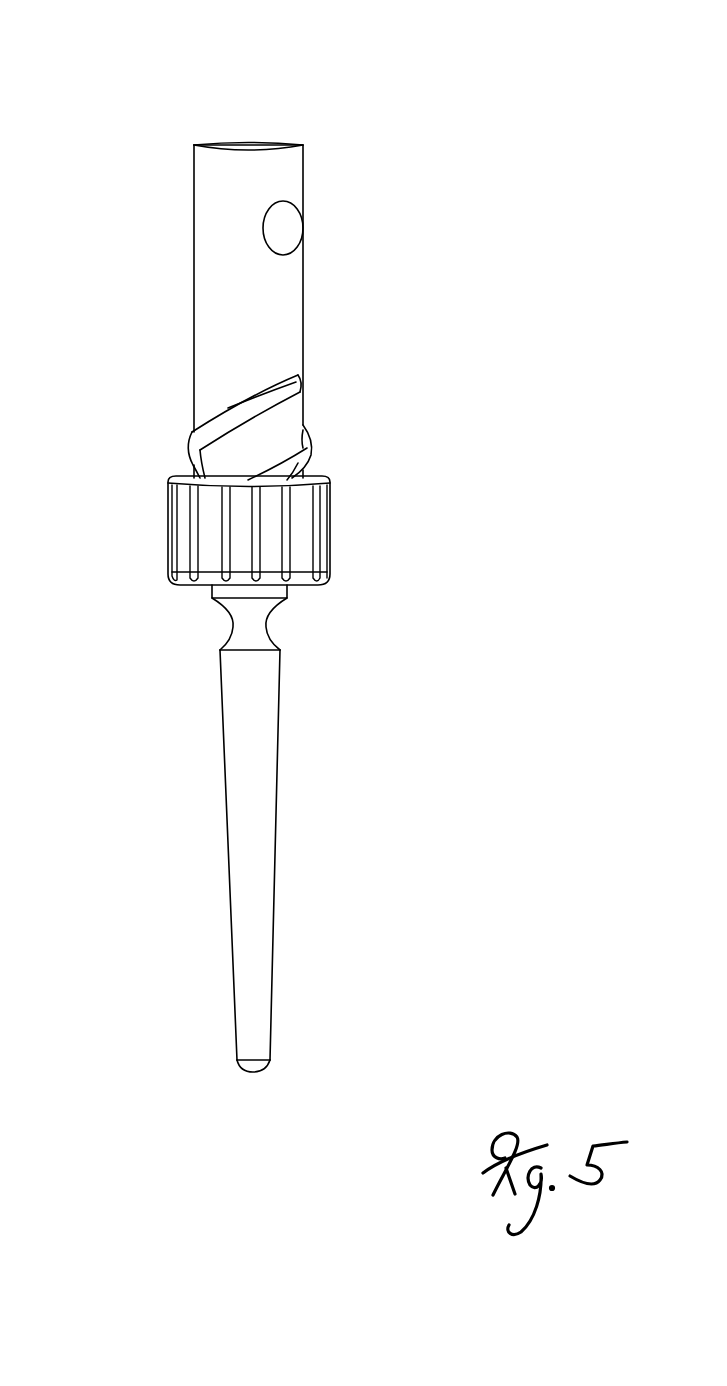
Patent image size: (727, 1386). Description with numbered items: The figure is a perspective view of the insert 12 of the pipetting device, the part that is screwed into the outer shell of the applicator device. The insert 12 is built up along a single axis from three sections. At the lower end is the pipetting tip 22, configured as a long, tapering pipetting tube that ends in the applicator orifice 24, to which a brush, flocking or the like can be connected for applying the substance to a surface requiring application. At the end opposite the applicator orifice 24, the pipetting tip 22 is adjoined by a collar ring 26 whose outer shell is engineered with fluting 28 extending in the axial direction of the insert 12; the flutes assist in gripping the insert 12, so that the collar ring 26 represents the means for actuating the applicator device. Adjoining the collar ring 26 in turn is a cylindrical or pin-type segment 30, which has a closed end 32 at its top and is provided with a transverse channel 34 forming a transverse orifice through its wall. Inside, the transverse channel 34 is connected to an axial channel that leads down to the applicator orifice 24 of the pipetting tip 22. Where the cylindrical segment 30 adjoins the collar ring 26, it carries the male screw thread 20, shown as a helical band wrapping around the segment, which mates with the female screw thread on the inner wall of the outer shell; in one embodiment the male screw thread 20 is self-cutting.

The insert 12 is at (452, 83).
The male screw thread 20 is at (293, 387).
The pipetting tip 22 is at (274, 912).
The applicator orifice 24 is at (248, 1072).
The collar ring 26 is at (332, 523).
The fluting 28 is at (208, 537).
The cylindrical segment 30 is at (304, 174).
The closed end 32 is at (238, 142).
The transverse channel 34 is at (293, 233).